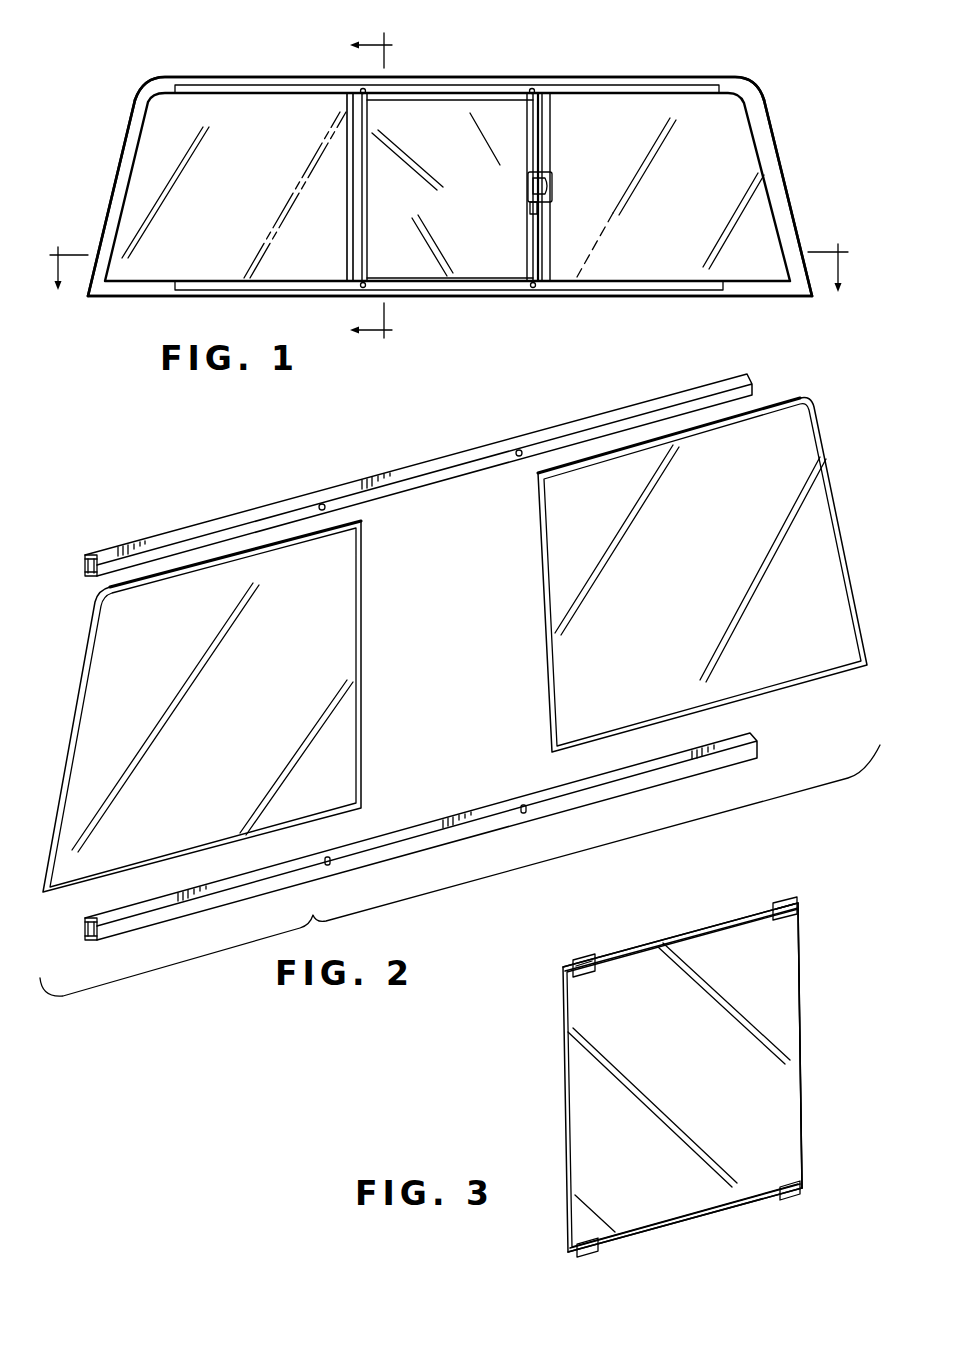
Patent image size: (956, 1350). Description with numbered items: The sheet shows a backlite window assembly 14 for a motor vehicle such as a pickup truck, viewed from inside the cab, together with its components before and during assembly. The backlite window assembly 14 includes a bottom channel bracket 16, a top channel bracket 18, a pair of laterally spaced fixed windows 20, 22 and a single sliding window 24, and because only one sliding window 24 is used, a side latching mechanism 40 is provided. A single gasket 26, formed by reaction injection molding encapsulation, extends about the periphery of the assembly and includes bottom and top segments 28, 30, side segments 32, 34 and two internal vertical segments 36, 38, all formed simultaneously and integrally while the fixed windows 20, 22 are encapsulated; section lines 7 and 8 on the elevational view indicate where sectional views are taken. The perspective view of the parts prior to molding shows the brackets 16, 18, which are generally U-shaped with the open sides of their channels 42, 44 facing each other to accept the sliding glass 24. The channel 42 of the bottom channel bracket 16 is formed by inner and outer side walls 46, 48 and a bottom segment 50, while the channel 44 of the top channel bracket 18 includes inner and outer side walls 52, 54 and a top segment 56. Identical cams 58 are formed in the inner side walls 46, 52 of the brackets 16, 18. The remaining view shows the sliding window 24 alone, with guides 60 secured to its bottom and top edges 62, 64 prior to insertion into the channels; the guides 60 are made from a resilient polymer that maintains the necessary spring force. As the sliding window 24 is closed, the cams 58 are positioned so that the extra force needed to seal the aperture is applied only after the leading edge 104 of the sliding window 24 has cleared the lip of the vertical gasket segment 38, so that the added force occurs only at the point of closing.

In FIG. 1, the backlite window assembly 14 is at (697, 35).
In FIG. 1, the bottom channel bracket 16 is at (643, 293).
In FIG. 2, the bottom channel bracket 16 is at (414, 821).
In FIG. 1, the top channel bracket 18 is at (252, 92).
In FIG. 2, the top channel bracket 18 is at (471, 449).
In FIG. 1, the fixed window 20 is at (207, 193).
In FIG. 2, the fixed window 20 is at (193, 731).
In FIG. 1, the fixed window 22 is at (645, 188).
In FIG. 2, the fixed window 22 is at (675, 591).
In FIG. 1, the sliding window 24 is at (410, 213).
In FIG. 3, the sliding window 24 is at (668, 1083).
In FIG. 1, the gasket 26 is at (135, 113).
In FIG. 1, the bottom segment 28 is at (137, 292).
In FIG. 1, the top segment 30 is at (163, 78).
In FIG. 1, the side segment 32 is at (125, 185).
In FIG. 1, the side segment 34 is at (778, 186).
In FIG. 1, the internal vertical segment 36 is at (350, 228).
In FIG. 1, the internal vertical segment 38 is at (548, 135).
In FIG. 1, the side latching mechanism 40 is at (553, 195).
In FIG. 2, the channel 42 is at (83, 933).
In FIG. 2, the channel 44 is at (82, 578).
In FIG. 2, the inner side wall 46 is at (120, 927).
In FIG. 2, the outer side wall 48 is at (85, 926).
In FIG. 2, the bottom segment 50 is at (88, 942).
In FIG. 2, the inner side wall 52 is at (105, 571).
In FIG. 2, the outer side wall 54 is at (84, 562).
In FIG. 2, the top segment 56 is at (97, 557).
In FIG. 2, the cam 58 is at (326, 504).
In FIG. 3, the guide 60 is at (577, 957).
In FIG. 3, the bottom edge 62 is at (655, 1228).
In FIG. 3, the top edge 64 is at (672, 925).
In FIG. 3, the leading edge 104 is at (803, 1035).
In FIG. 1, the section line 7- 7 is at (445, 258).
In FIG. 1, the section line 8- 8 is at (378, 187).